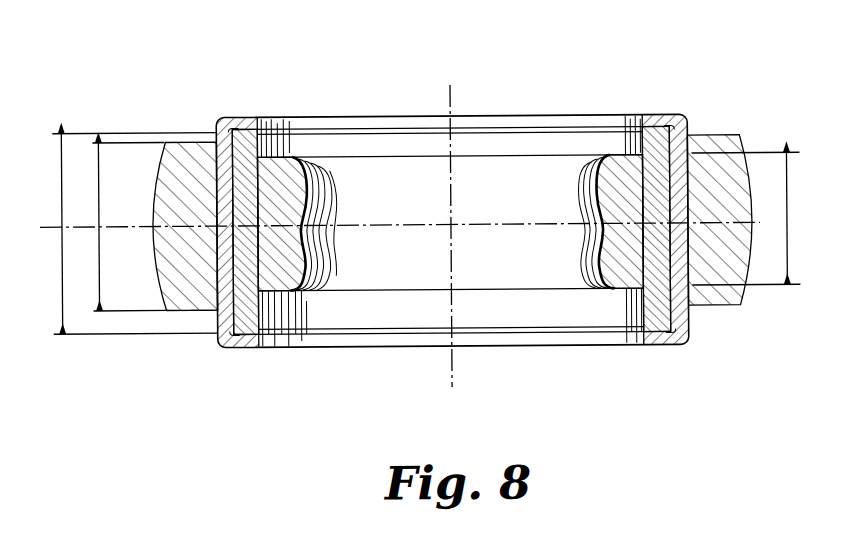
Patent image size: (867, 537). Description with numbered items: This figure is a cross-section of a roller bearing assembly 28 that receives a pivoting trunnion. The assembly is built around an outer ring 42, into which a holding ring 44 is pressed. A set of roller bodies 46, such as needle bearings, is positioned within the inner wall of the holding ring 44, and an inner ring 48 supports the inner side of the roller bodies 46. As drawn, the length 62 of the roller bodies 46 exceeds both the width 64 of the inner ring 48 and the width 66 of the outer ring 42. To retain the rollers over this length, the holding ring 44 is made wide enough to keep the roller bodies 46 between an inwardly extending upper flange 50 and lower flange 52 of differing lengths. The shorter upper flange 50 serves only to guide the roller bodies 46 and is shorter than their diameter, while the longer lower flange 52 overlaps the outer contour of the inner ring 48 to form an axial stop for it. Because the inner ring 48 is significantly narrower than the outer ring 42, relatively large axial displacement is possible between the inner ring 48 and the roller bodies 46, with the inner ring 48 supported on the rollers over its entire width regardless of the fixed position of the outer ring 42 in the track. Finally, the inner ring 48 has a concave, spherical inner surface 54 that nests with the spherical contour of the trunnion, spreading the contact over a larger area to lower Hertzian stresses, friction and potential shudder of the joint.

The roller bearing assembly 28 is at (674, 62).
The outer ring 42 is at (155, 265).
The holding ring 44 is at (217, 280).
The roller bodies 46 is at (263, 134).
The inner ring 48 is at (278, 156).
The upper flange 50 is at (231, 127).
The lower flange 52 is at (242, 347).
The inner surface 54 is at (306, 250).
The length of the roller bodies 62 is at (133, 234).
The width of the inner ring 64 is at (745, 218).
The width of the outer ring 66 is at (128, 226).